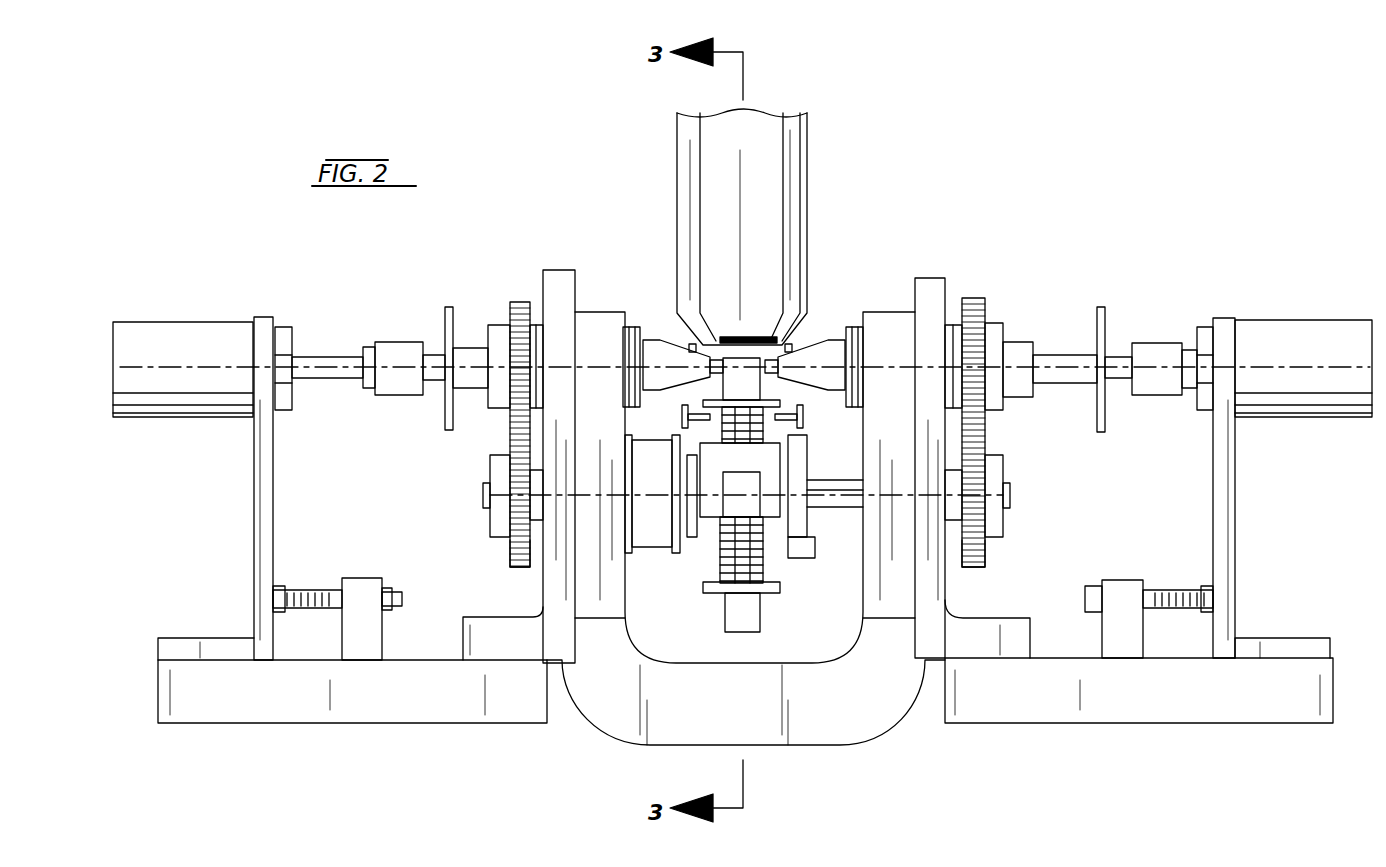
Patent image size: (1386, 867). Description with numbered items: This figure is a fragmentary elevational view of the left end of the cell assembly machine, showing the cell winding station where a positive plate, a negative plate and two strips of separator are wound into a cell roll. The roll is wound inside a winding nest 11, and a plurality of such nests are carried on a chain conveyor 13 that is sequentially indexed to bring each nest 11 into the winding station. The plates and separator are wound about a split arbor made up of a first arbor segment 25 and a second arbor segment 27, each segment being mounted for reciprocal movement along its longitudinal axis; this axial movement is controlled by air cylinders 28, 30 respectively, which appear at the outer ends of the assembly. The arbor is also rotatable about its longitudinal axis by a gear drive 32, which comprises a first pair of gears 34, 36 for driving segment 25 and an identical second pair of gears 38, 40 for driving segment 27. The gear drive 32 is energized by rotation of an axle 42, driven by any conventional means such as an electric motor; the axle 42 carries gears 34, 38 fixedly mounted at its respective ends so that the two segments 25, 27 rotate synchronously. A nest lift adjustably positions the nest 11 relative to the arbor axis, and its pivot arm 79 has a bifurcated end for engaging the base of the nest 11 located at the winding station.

The winding nest 11 is at (740, 383).
The chain conveyor 13 is at (720, 556).
The first arbor segment 25 is at (718, 345).
The second arbor segment 27 is at (888, 362).
The air cylinder 28 is at (175, 330).
The air cylinder 30 is at (1302, 330).
The gear drive 32 is at (480, 501).
The gear 34 is at (510, 556).
The gear 36 is at (508, 310).
The gear 38 is at (988, 556).
The gear 40 is at (987, 316).
The axle 42 is at (851, 513).
The pivot arm 79 is at (682, 420).